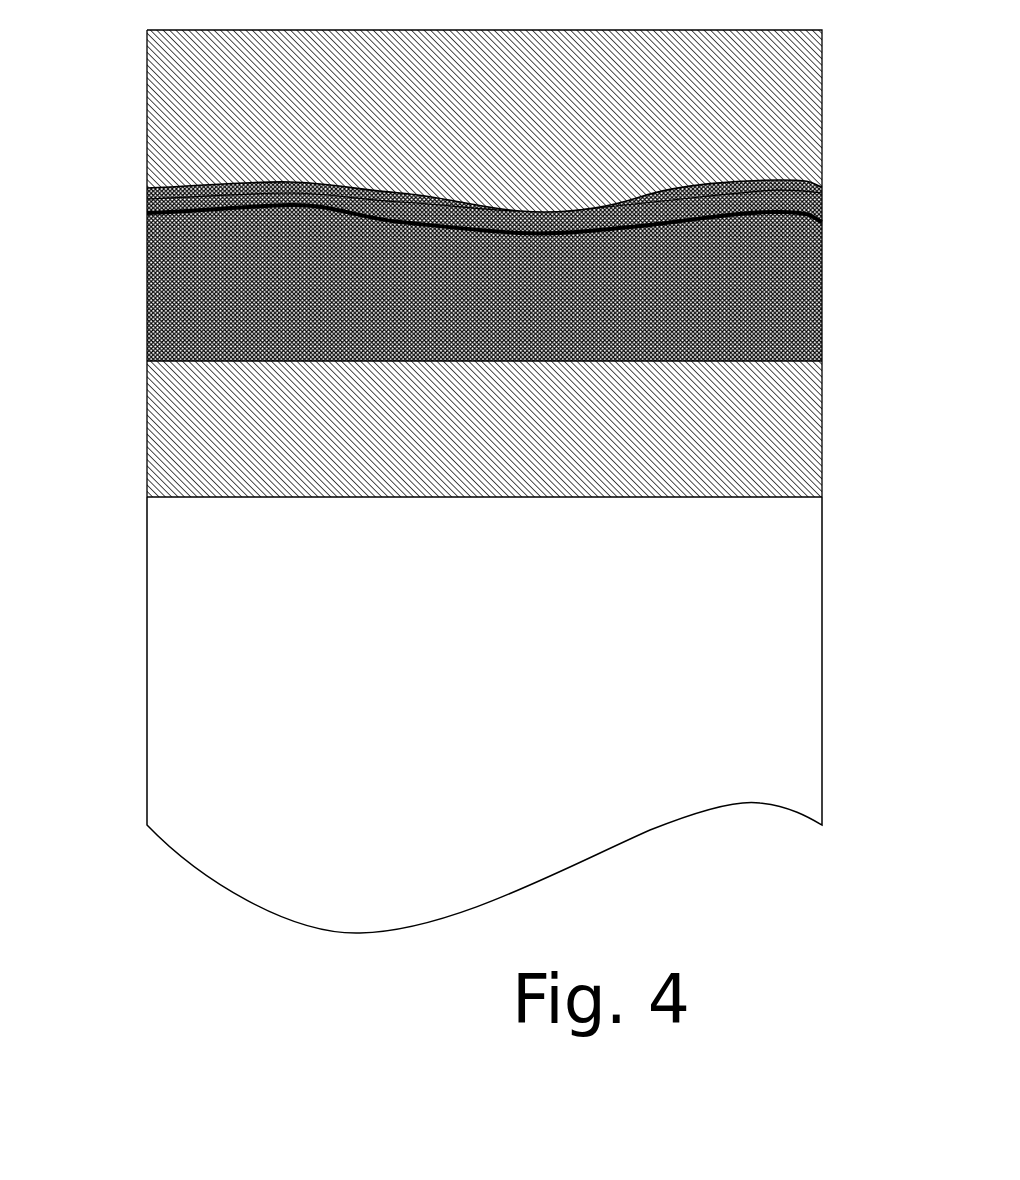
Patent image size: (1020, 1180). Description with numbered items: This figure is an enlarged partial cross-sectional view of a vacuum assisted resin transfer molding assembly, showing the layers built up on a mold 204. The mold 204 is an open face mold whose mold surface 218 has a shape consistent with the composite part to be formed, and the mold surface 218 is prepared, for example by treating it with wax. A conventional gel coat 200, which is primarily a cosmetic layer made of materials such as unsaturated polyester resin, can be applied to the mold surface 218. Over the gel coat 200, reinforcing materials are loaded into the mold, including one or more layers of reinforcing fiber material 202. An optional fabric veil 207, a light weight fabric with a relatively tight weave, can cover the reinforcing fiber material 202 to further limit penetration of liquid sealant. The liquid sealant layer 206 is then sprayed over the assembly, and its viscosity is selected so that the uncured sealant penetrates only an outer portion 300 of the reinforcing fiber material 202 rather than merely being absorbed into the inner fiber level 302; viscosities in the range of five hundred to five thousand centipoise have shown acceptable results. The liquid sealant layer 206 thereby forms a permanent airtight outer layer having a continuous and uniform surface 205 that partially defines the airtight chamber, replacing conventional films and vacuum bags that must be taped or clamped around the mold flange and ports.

The gel coat 200 is at (822, 430).
The reinforcing fiber material 202 is at (484, 270).
The mold 204 is at (822, 648).
The continuous and uniform surface 205 is at (148, 244).
The liquid sealant layer 206 is at (147, 113).
The fabric veil 207 is at (147, 188).
The mold surface 218 is at (147, 498).
The outer portion 300 is at (800, 190).
The inner fiber level 302 is at (800, 290).